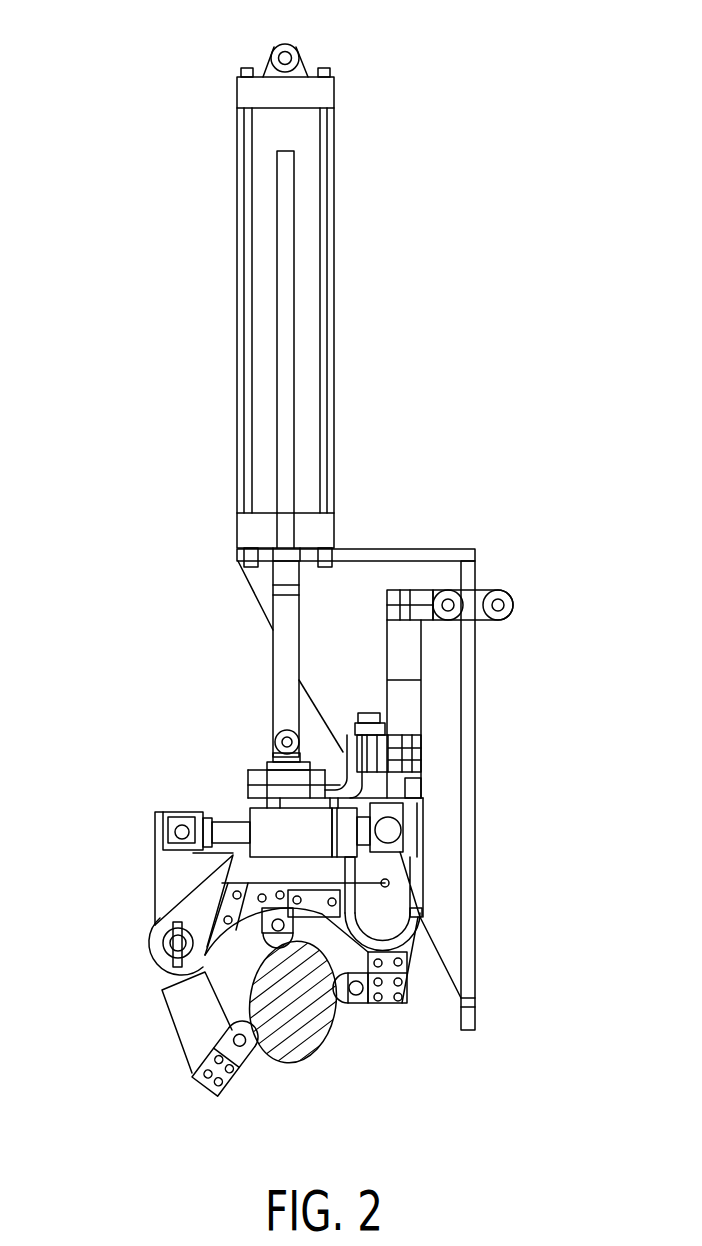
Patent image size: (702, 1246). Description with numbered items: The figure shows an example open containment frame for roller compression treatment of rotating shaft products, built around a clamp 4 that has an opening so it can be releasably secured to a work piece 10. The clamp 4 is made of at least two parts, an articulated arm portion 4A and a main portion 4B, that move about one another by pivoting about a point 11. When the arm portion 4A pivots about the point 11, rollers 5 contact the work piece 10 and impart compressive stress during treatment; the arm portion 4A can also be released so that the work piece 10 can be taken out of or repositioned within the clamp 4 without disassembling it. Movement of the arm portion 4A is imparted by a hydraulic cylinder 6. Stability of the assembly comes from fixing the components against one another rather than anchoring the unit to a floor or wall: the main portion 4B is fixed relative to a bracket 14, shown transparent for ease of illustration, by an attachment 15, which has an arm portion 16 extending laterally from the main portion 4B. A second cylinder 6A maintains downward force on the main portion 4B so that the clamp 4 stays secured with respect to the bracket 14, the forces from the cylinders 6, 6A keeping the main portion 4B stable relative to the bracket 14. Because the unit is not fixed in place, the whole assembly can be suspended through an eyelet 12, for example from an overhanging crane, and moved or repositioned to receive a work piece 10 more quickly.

The clamp 4 is at (130, 813).
The articulated arm portion of the clamp 4A is at (193, 1040).
The main portion of the clamp 4B is at (388, 910).
The rollers 5 is at (252, 1050).
The hydraulic cylinder 6 is at (258, 823).
The cylinder 6A is at (268, 325).
The work piece 10 is at (320, 1038).
The pivot point 11 is at (170, 947).
The eyelet 12 is at (296, 47).
The bracket 14 is at (362, 585).
The attachment 15 is at (430, 590).
The arm portion 16 is at (413, 697).